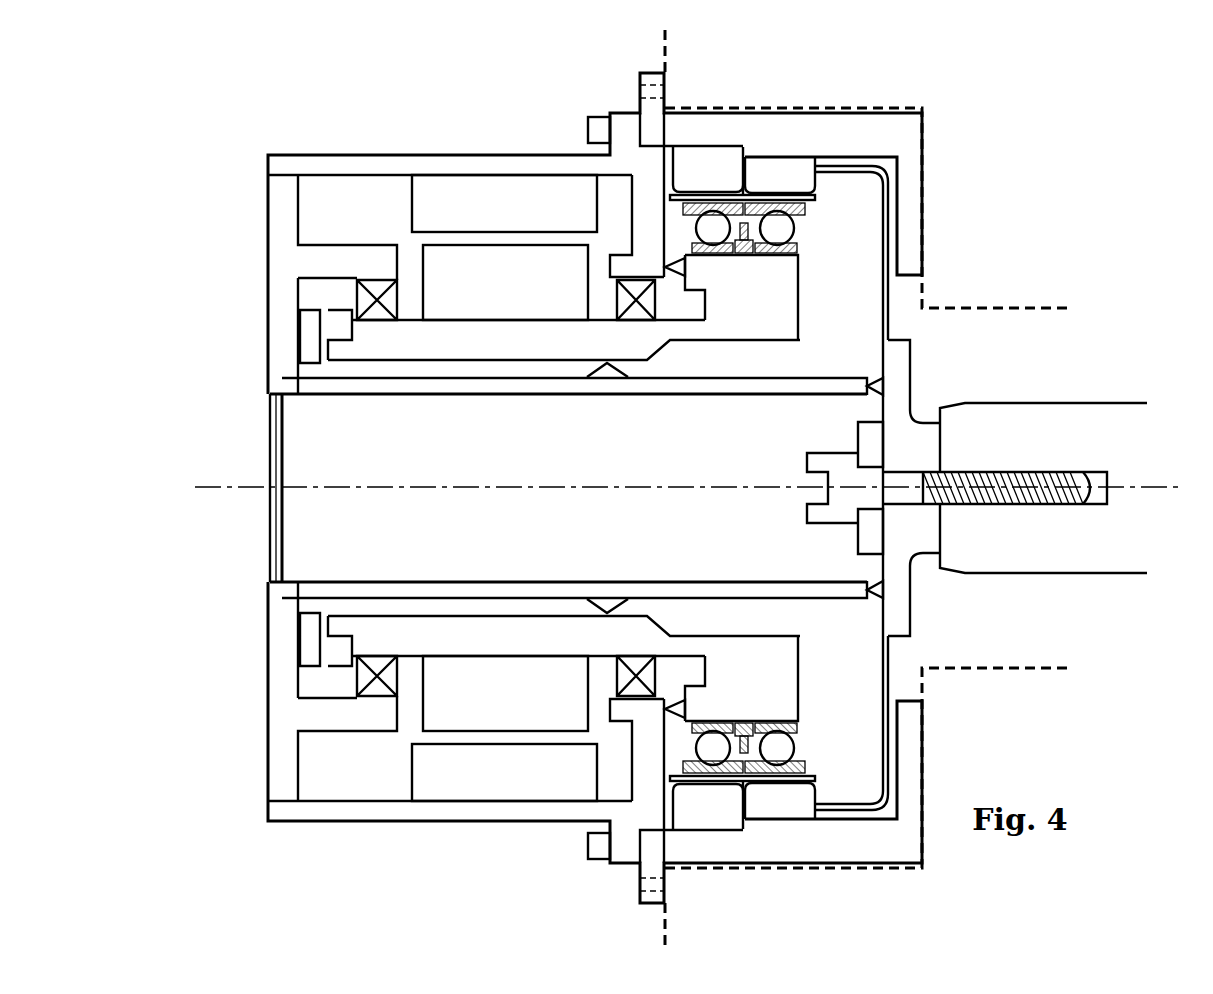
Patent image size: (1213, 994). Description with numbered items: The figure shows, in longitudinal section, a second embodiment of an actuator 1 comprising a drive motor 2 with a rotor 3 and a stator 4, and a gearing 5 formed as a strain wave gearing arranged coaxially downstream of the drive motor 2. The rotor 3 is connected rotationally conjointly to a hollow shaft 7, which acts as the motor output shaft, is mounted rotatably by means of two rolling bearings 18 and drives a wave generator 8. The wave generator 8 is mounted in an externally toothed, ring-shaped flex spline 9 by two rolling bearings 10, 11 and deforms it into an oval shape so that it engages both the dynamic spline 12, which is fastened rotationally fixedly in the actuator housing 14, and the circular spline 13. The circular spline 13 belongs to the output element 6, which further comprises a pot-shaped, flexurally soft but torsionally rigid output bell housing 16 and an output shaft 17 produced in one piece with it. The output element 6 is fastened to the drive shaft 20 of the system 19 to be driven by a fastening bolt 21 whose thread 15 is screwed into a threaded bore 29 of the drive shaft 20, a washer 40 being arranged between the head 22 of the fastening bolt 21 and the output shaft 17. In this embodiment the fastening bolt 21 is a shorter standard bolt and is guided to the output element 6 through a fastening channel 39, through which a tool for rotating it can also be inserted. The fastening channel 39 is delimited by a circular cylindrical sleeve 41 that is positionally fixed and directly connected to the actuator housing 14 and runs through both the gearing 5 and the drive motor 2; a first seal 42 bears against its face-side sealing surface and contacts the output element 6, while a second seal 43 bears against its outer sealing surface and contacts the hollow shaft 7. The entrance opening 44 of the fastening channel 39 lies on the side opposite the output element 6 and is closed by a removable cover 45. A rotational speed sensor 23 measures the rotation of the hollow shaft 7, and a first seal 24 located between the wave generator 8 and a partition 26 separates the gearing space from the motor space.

The actuator 1 is at (286, 126).
The drive motor 2 is at (507, 820).
The rotor 3 is at (505, 488).
The stator 4 is at (504, 488).
The gearing 5 is at (750, 859).
The output element 6 is at (866, 732).
The hollow shaft 7 is at (452, 353).
The wave generator 8 is at (741, 488).
The flex spline 9 is at (815, 202).
The rolling bearing 10 is at (806, 246).
The rolling bearing 11 is at (726, 270).
The dynamic spline 12 is at (708, 488).
The circular spline 13 is at (780, 488).
The actuator housing 14 is at (416, 157).
The thread 15 is at (1003, 497).
The output bell housing 16 is at (885, 205).
The output shaft 17 is at (907, 353).
The rolling bearings 18 is at (375, 315).
The system to be driven 19 is at (1103, 80).
The drive shaft 20 is at (1093, 407).
The fastening bolt 21 is at (974, 448).
The head 22 is at (822, 462).
The rotational speed sensor 23 is at (336, 373).
The first seal 24 is at (677, 272).
The partition 26 is at (643, 240).
The threaded bore 29 is at (1100, 472).
The fastening channel 39 is at (568, 488).
The washer 40 is at (865, 446).
The sleeve 41 is at (541, 388).
The first seal 42 is at (893, 390).
The second seal 43 is at (610, 373).
The entrance opening 44 is at (226, 550).
The removable cover 45 is at (276, 547).